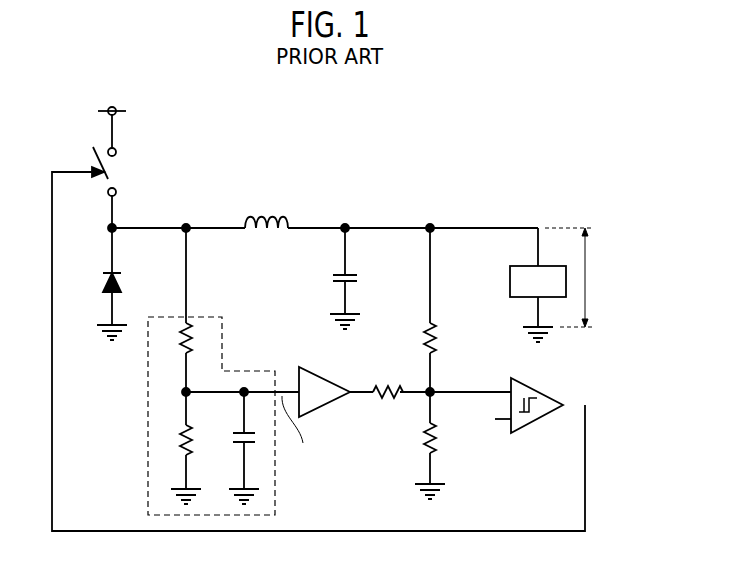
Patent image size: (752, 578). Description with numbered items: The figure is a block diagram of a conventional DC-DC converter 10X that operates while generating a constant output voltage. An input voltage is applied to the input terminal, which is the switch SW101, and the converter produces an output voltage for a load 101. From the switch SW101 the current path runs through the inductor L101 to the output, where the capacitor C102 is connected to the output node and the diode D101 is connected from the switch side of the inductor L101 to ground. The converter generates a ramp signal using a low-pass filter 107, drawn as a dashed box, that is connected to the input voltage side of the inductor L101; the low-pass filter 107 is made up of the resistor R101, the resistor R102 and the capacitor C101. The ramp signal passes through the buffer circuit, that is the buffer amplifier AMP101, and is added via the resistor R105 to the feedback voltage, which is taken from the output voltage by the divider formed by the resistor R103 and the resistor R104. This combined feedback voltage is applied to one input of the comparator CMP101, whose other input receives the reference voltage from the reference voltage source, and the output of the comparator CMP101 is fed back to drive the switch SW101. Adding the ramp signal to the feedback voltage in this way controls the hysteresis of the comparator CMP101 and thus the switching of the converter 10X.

The DC-DC converter 10X is at (498, 147).
The switch SW101 is at (93, 152).
The diode D101 is at (122, 281).
The inductor L101 is at (282, 204).
The capacitor C102 is at (356, 274).
The load 101 is at (510, 277).
The resistor R101 is at (179, 342).
The resistor R102 is at (178, 438).
The capacitor C101 is at (236, 444).
The low-pass filter 107 is at (251, 370).
The buffer amplifier AMP101 is at (338, 362).
The resistor R105 is at (376, 398).
The resistor R103 is at (440, 343).
The resistor R104 is at (423, 440).
The comparator CMP101 is at (552, 377).